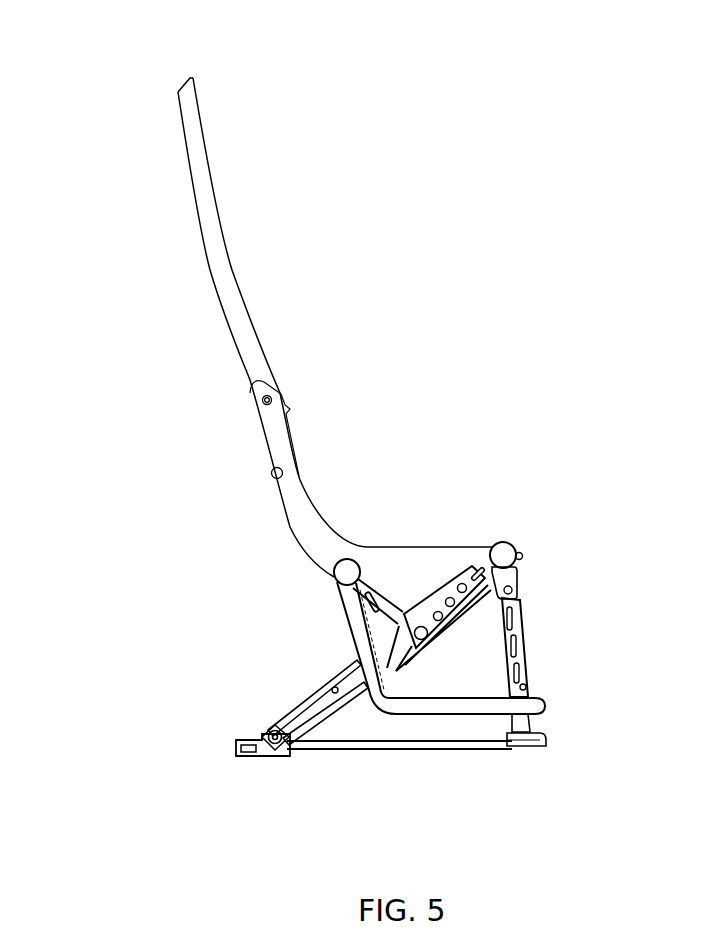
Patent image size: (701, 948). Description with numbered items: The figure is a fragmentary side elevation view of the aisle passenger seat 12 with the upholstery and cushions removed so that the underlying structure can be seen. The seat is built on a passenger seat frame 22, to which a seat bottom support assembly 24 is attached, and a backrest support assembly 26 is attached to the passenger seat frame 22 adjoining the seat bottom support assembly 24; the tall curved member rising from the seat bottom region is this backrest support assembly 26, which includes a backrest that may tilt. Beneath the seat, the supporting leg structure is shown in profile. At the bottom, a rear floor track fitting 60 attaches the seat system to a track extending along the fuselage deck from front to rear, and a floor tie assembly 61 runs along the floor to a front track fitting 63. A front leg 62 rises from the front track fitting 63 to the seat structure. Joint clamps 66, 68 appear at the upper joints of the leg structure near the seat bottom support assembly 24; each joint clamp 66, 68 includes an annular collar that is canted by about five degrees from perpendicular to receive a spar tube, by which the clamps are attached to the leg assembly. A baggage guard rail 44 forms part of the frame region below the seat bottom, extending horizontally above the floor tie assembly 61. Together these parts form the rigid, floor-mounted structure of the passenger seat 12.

The passenger seat 12 is at (330, 83).
The backrest support assembly 26 is at (177, 93).
The seat bottom support assembly 24 is at (508, 543).
The joint clamp 66 is at (507, 542).
The joint clamp 68 is at (333, 574).
The baggage guard rail 44 is at (442, 712).
The front leg 62 is at (530, 660).
The front track fitting 63 is at (520, 750).
The floor tie assembly 61 is at (347, 750).
The rear floor track fitting 60 is at (240, 757).
The passenger seat frame 22 is at (317, 693).